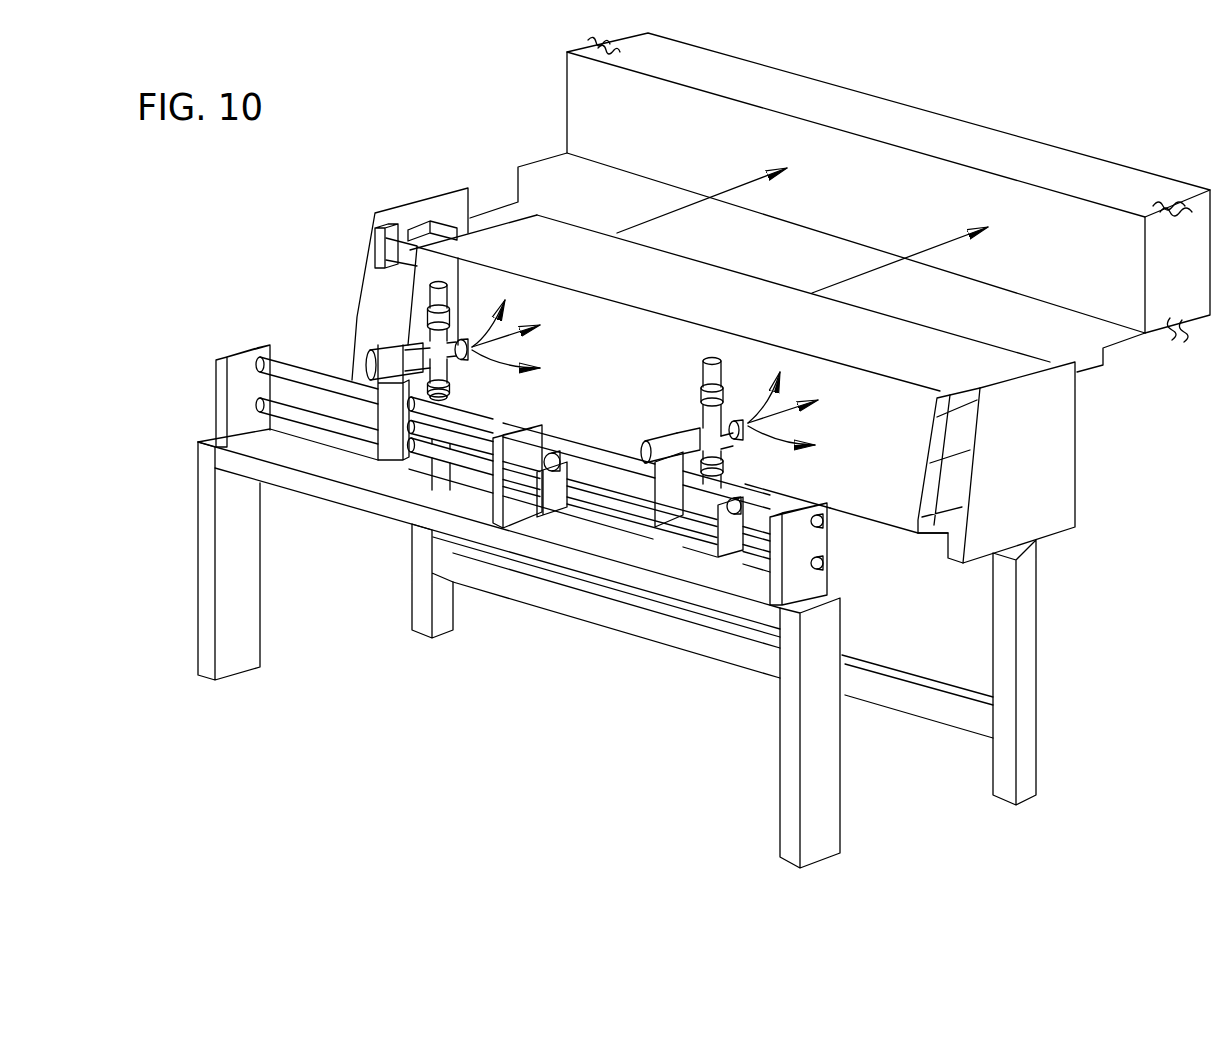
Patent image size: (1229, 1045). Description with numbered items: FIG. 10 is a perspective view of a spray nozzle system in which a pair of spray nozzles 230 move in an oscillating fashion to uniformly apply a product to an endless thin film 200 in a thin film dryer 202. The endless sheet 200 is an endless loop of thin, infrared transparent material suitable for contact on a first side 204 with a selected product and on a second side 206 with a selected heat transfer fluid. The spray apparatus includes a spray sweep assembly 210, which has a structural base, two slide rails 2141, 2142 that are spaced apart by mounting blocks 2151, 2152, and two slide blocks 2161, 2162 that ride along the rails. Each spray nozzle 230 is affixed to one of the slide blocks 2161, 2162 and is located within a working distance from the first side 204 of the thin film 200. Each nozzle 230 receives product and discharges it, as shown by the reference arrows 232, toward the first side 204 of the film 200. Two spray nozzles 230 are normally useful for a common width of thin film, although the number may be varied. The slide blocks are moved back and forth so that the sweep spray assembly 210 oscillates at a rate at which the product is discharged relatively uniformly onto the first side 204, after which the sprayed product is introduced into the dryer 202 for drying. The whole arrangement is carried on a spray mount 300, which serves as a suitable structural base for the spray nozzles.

The endless sheet 200 is at (975, 342).
The thin film dryer 202 is at (952, 117).
The first side 204 is at (884, 437).
The second side 206 is at (952, 438).
The spray sweep assembly 210 is at (213, 398).
The slide rail 2141 is at (330, 425).
The slide rail 2142 is at (287, 367).
The mounting block 2151 is at (815, 580).
The mounting block 2152 is at (238, 377).
The slide block 2161 is at (397, 455).
The slide block 2162 is at (667, 483).
The spray nozzle 230 is at (463, 310).
The reference arrows 232 is at (488, 354).
The spray mount 300 is at (828, 816).